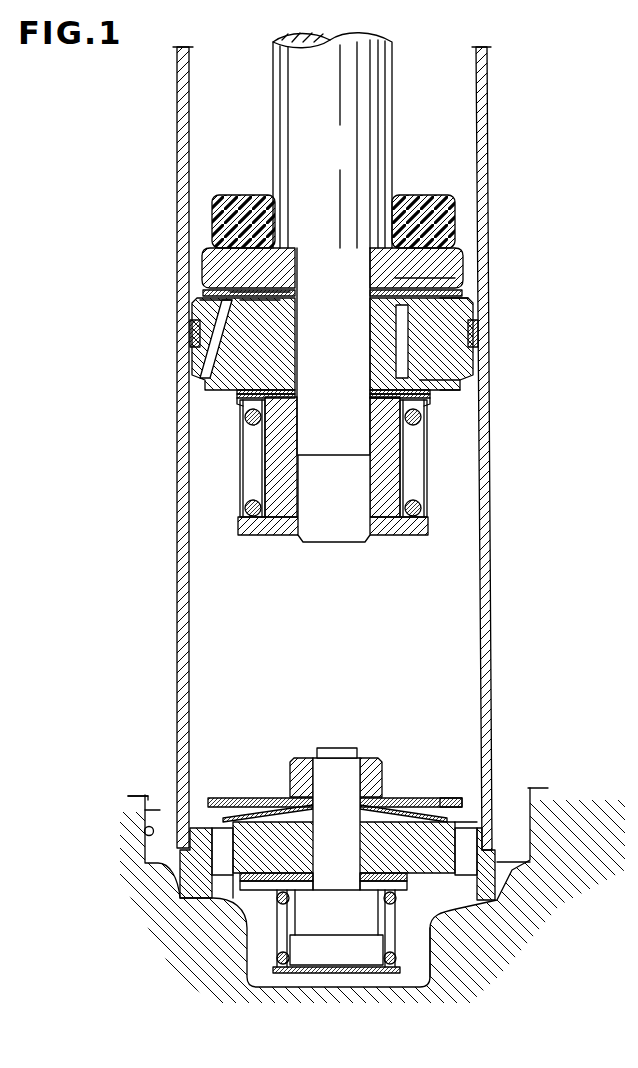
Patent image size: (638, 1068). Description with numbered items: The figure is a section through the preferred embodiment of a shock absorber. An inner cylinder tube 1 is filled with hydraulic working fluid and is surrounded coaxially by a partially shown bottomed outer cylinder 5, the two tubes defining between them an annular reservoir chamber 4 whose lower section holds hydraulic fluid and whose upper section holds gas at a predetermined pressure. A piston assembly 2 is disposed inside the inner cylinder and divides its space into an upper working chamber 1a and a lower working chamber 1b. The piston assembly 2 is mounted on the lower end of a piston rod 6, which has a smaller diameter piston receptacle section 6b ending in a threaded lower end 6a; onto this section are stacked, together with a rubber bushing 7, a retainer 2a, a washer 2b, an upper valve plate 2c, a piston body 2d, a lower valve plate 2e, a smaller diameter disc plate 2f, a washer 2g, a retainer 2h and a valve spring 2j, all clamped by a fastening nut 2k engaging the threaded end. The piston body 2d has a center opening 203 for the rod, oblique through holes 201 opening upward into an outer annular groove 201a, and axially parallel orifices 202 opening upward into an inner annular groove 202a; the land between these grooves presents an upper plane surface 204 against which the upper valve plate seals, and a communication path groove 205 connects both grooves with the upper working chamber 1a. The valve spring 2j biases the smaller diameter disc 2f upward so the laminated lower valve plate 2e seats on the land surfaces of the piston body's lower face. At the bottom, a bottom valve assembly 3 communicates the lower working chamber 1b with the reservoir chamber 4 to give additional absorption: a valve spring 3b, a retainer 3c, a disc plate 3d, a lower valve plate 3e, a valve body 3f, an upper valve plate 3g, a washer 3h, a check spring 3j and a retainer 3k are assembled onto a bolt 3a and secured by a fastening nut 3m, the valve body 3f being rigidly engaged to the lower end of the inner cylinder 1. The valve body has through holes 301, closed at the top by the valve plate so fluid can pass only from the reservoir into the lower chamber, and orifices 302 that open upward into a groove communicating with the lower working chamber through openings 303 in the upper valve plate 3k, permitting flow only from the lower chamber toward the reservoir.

The cylinder tube 1 is at (488, 125).
The upper working chamber 1a is at (441, 107).
The lower working chamber 1b is at (374, 665).
The piston assembly 2 is at (207, 380).
The retainer 2a is at (457, 252).
The washer 2b is at (395, 278).
The upper valve plate 2c is at (400, 292).
The piston body 2d is at (452, 333).
The lower valve plate 2e is at (447, 390).
The smaller diameter disc plate 2f is at (437, 395).
The washer 2g is at (373, 397).
The retainer 2h is at (245, 402).
The valve spring 2j is at (246, 508).
The fastening nut 2k is at (250, 532).
The through holes 201 is at (207, 355).
The outer annular groove 201a is at (207, 302).
The orifices 202 is at (400, 343).
The inner annular groove 202a is at (260, 300).
The center opening 203 is at (297, 310).
The upper plane surface 204 is at (232, 290).
The communication path groove 205 is at (457, 298).
The bottom valve assembly 3 is at (508, 875).
The bolt 3a is at (317, 957).
The valve spring 3b is at (273, 963).
The retainer 3c is at (272, 891).
The disc plate 3d is at (370, 905).
The lower valve plate 3e is at (237, 883).
The valve body 3f is at (497, 862).
The upper valve plate 3g is at (463, 817).
The washer 3h is at (360, 813).
The check spring 3j is at (452, 797).
The retainer 3k is at (388, 800).
The fastening nut 3m is at (302, 764).
The through holes 301 is at (220, 858).
The orifices 302 is at (485, 880).
The through openings 303 is at (256, 810).
The reservoir chamber 4 is at (160, 810).
The outer cylinder 5 is at (144, 831).
The piston rod 6 is at (392, 76).
The threaded lower end 6a is at (386, 522).
The smaller diameter piston receptacle section 6b is at (334, 522).
The rubber bushing 7 is at (445, 196).